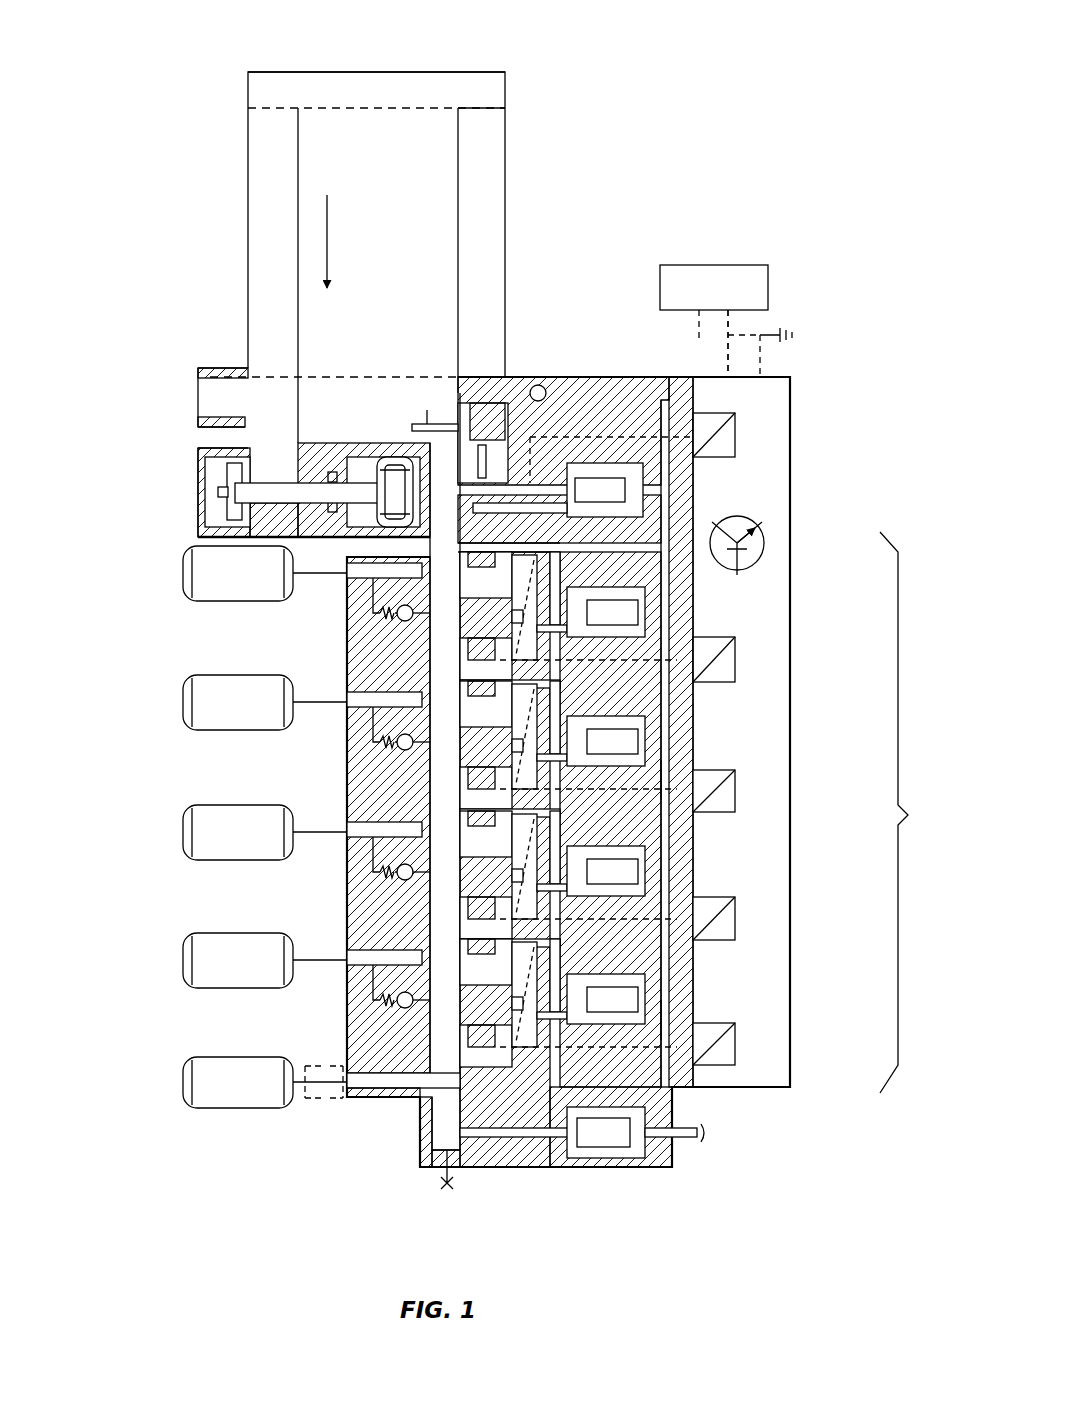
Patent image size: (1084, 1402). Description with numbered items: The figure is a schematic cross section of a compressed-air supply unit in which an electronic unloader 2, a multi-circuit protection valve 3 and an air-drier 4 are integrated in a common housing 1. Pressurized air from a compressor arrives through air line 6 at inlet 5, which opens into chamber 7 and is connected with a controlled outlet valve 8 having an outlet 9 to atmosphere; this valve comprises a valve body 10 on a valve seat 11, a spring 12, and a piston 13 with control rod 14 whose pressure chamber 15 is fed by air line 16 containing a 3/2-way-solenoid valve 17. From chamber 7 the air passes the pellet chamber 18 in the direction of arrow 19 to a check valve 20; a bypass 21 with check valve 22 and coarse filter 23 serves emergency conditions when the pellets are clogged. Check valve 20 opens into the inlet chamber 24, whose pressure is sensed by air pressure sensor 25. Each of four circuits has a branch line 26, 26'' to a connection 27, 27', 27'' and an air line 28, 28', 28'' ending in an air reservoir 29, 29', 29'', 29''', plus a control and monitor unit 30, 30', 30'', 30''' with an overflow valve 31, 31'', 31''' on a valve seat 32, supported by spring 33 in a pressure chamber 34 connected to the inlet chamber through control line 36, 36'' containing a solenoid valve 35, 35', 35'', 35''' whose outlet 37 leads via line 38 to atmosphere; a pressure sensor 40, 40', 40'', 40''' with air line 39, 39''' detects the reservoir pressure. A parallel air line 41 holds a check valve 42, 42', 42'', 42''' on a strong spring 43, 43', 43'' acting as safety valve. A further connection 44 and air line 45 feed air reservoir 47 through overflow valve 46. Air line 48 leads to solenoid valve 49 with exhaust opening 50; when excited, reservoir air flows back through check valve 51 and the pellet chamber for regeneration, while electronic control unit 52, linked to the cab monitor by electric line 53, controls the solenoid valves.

The common housing 1 is at (292, 548).
The electronic unloader 2 is at (150, 372).
The multi-circuit protection valve 3 is at (908, 812).
The air-drier 4 is at (262, 48).
The inlet 5 is at (215, 392).
The air line 6 is at (182, 398).
The chamber 7 is at (270, 437).
The controlled outlet valve 8 is at (192, 530).
The outlet 9 is at (215, 472).
The valve body 10 is at (215, 490).
The valve seat 11 is at (270, 540).
The spring 12 is at (212, 512).
The piston 13 is at (380, 468).
The control rod 14 is at (300, 495).
The pressure chamber 15 is at (390, 478).
The air line 16 is at (578, 405).
The 3/2-way-solenoid valve 17 is at (596, 460).
The pellet chamber 18 is at (380, 118).
The arrow 19 is at (327, 225).
The check valve 20 is at (425, 424).
The bypass 21 is at (498, 378).
The check valve 22 is at (478, 440).
The coarse filter 23 is at (483, 105).
The inlet chamber 24 is at (440, 1118).
The air pressure sensor 25 is at (730, 443).
The branch line 26 is at (551, 780).
The branch line 26'' is at (475, 1003).
The connection 27 is at (324, 617).
The connection 27' is at (331, 745).
The connection 27'' is at (331, 873).
The air line 28 is at (332, 600).
The air line 28' is at (332, 729).
The air line 28'' is at (331, 860).
The air reservoir 29 is at (234, 573).
The air reservoir 29' is at (233, 702).
The air reservoir 29'' is at (233, 832).
The air reservoir 29''' is at (233, 960).
The control and monitor unit 30 is at (827, 560).
The control and monitor unit 30' is at (832, 709).
The control and monitor unit 30'' is at (835, 847).
The control and monitor unit 30''' is at (839, 975).
The overflow valve 31 is at (568, 657).
The overflow valve 31'' is at (613, 879).
The overflow valve 31''' is at (588, 1077).
The valve seat 32 is at (455, 645).
The spring 33 is at (620, 500).
The pressure chamber 34 is at (533, 578).
The solenoid valve 35 is at (711, 646).
The solenoid valve 35' is at (677, 771).
The solenoid valve 35'' is at (708, 867).
The solenoid valve 35''' is at (709, 1004).
The control line 36 is at (537, 623).
The control line 36'' is at (693, 780).
The outlet 37 is at (690, 622).
The line 38 is at (665, 1020).
The air line 39 is at (597, 749).
The air line 39''' is at (606, 1102).
The pressure sensor 40 is at (808, 640).
The pressure sensor 40' is at (783, 780).
The pressure sensor 40'' is at (788, 918).
The pressure sensor 40''' is at (755, 1061).
The air line 41 is at (375, 600).
The check valve 42 is at (364, 645).
The check valve 42' is at (364, 778).
The check valve 42'' is at (364, 909).
The check valve 42''' is at (361, 1003).
The spring 43 is at (294, 638).
The spring 43' is at (294, 767).
The spring 43'' is at (294, 896).
The connection 44 is at (380, 1080).
The air line 45 is at (333, 1098).
The overflow valve 46 is at (318, 1102).
The air reservoir 47 is at (215, 1093).
The air line 48 is at (475, 1137).
The solenoid valve 49 is at (600, 1165).
The exhaust opening 50 is at (685, 1150).
The check valve 51 is at (540, 385).
The electronic control unit 52 is at (750, 385).
The electric line 53 is at (730, 335).